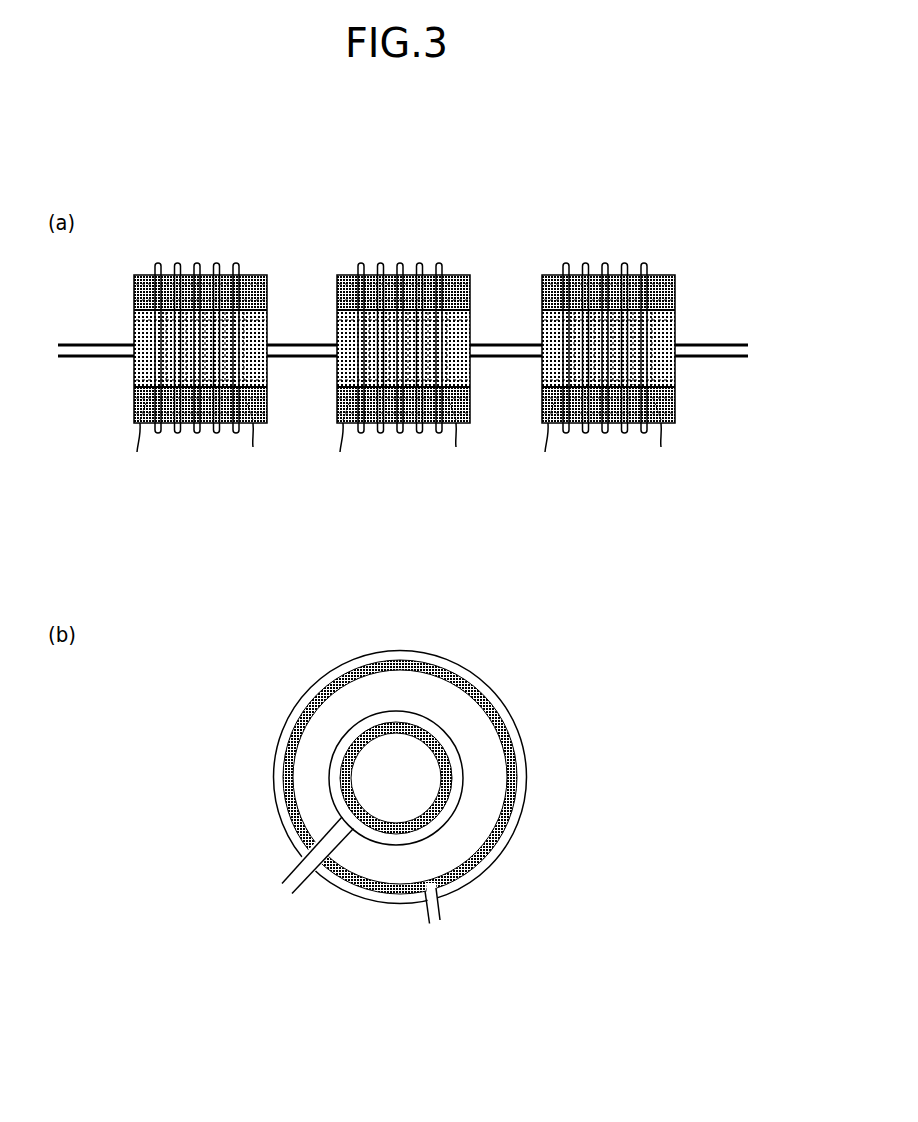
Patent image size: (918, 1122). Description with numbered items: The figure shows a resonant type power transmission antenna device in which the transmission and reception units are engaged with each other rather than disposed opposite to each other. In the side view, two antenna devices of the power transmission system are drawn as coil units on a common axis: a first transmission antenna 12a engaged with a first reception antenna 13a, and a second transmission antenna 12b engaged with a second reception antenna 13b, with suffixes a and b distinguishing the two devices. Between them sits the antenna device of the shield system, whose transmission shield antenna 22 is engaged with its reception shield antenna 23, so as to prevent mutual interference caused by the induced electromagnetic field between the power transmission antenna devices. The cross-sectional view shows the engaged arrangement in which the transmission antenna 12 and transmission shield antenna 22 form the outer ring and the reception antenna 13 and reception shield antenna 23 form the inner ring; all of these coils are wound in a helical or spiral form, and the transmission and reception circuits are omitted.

The transmission antenna 12a is at (212, 433).
The transmission antenna 12b is at (621, 433).
The transmission shield antenna 22 is at (415, 433).
The reception antenna 13a is at (193, 386).
The reception antenna 13b is at (602, 386).
The reception shield antenna 23 is at (398, 386).
The transmission antenna 12 is at (515, 820).
The reception antenna 13 is at (329, 780).